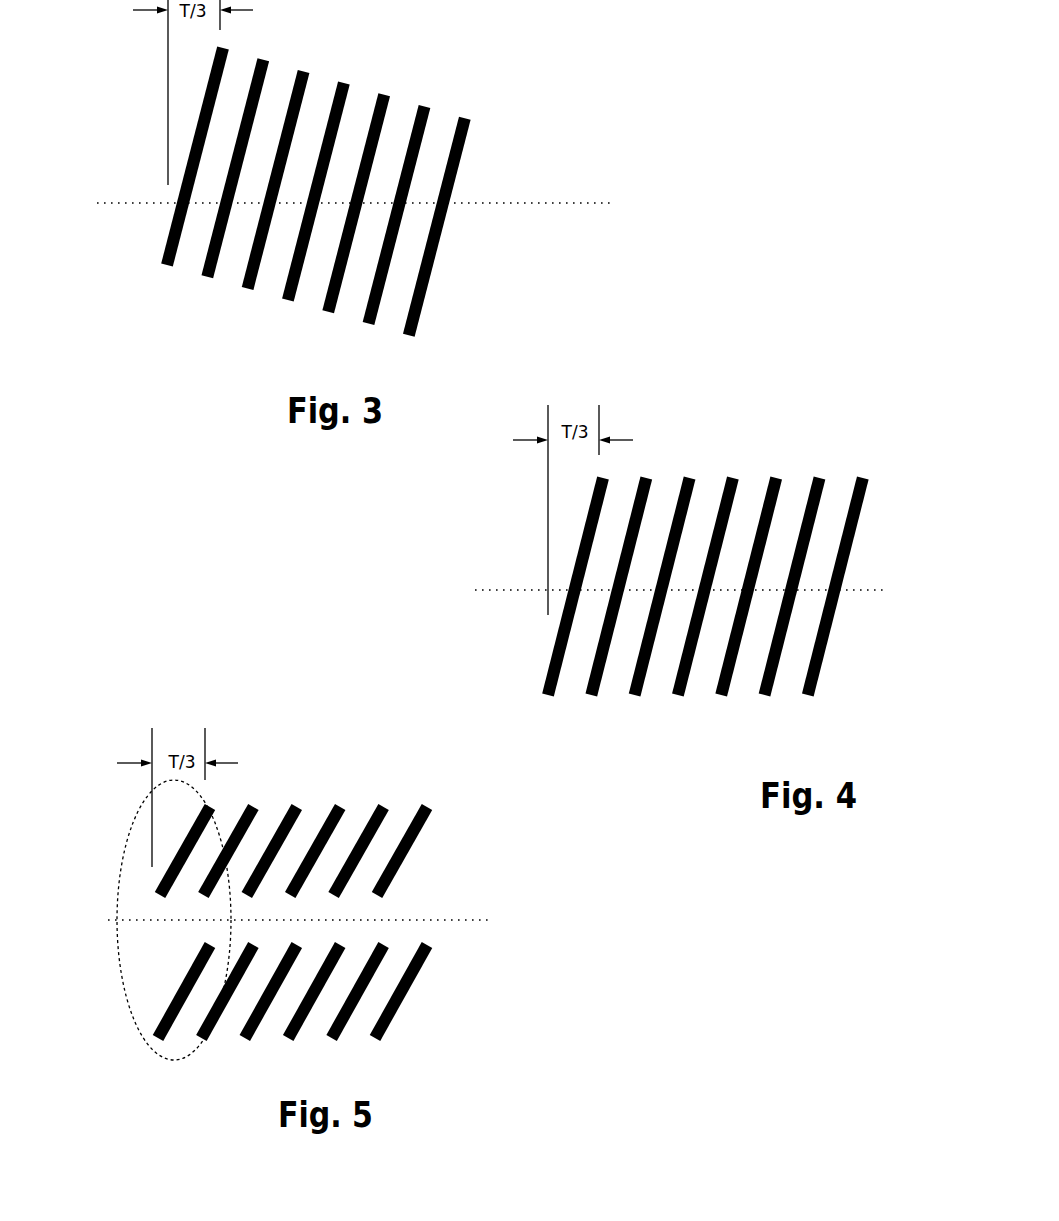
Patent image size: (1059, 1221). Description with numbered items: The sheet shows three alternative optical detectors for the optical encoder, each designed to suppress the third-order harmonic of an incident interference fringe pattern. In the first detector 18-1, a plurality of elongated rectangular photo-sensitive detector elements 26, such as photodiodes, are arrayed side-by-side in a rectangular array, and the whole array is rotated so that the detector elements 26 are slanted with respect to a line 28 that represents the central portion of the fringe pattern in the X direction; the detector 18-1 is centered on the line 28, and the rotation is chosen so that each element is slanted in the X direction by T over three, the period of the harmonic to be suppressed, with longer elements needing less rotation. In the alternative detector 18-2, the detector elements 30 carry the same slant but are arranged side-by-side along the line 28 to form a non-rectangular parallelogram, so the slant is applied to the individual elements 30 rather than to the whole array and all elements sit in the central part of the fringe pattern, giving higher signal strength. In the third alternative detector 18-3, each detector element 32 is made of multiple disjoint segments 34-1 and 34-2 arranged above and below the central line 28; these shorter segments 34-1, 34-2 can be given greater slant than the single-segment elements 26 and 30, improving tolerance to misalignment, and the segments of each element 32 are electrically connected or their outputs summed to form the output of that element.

In FIG. 3, the first detector 18-1 is at (343, 186).
In FIG. 4, the alternative detector 18-2 is at (705, 561).
In FIG. 5, the third alternative detector 18-3 is at (235, 904).
In FIG. 3, the detector elements 26 is at (287, 201).
In FIG. 3, the line 28 is at (389, 163).
In FIG. 4, the line 28 is at (651, 566).
In FIG. 5, the line 28 is at (308, 889).
In FIG. 4, the detector elements 30 is at (705, 616).
In FIG. 5, the detector element 32 is at (153, 942).
In FIG. 5, the segment 34-1 is at (234, 864).
In FIG. 5, the segment 34-2 is at (234, 1001).